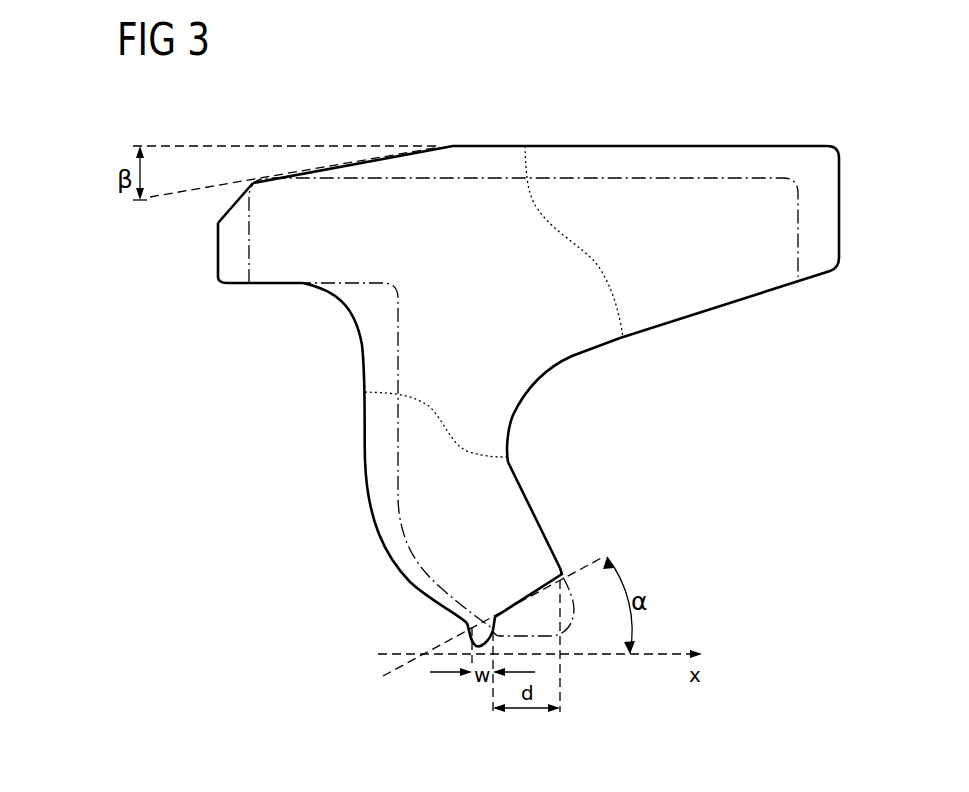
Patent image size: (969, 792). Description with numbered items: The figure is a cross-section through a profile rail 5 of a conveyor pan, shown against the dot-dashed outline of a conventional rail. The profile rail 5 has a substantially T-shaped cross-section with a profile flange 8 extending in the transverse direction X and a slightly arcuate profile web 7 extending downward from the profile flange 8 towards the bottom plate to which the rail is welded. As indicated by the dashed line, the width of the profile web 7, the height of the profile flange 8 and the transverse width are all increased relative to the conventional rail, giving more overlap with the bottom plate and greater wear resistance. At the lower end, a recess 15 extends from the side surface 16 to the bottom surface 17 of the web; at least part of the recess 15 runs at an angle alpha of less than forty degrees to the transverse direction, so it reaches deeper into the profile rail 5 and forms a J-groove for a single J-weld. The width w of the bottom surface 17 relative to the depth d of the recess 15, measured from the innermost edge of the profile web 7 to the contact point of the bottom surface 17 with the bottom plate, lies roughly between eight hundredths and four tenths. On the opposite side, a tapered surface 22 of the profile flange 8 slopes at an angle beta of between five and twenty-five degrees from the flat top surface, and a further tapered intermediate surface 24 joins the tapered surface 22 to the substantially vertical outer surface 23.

The profile rail 5 is at (752, 333).
The profile web 7 is at (363, 447).
The profile flange 8 is at (630, 146).
The recess 15 is at (545, 621).
The side surface 16 is at (530, 507).
The bottom surface 17 is at (470, 643).
The tapered surface 22 is at (320, 170).
The outer surface 23 is at (217, 247).
The tapered intermediate surface 24 is at (233, 203).